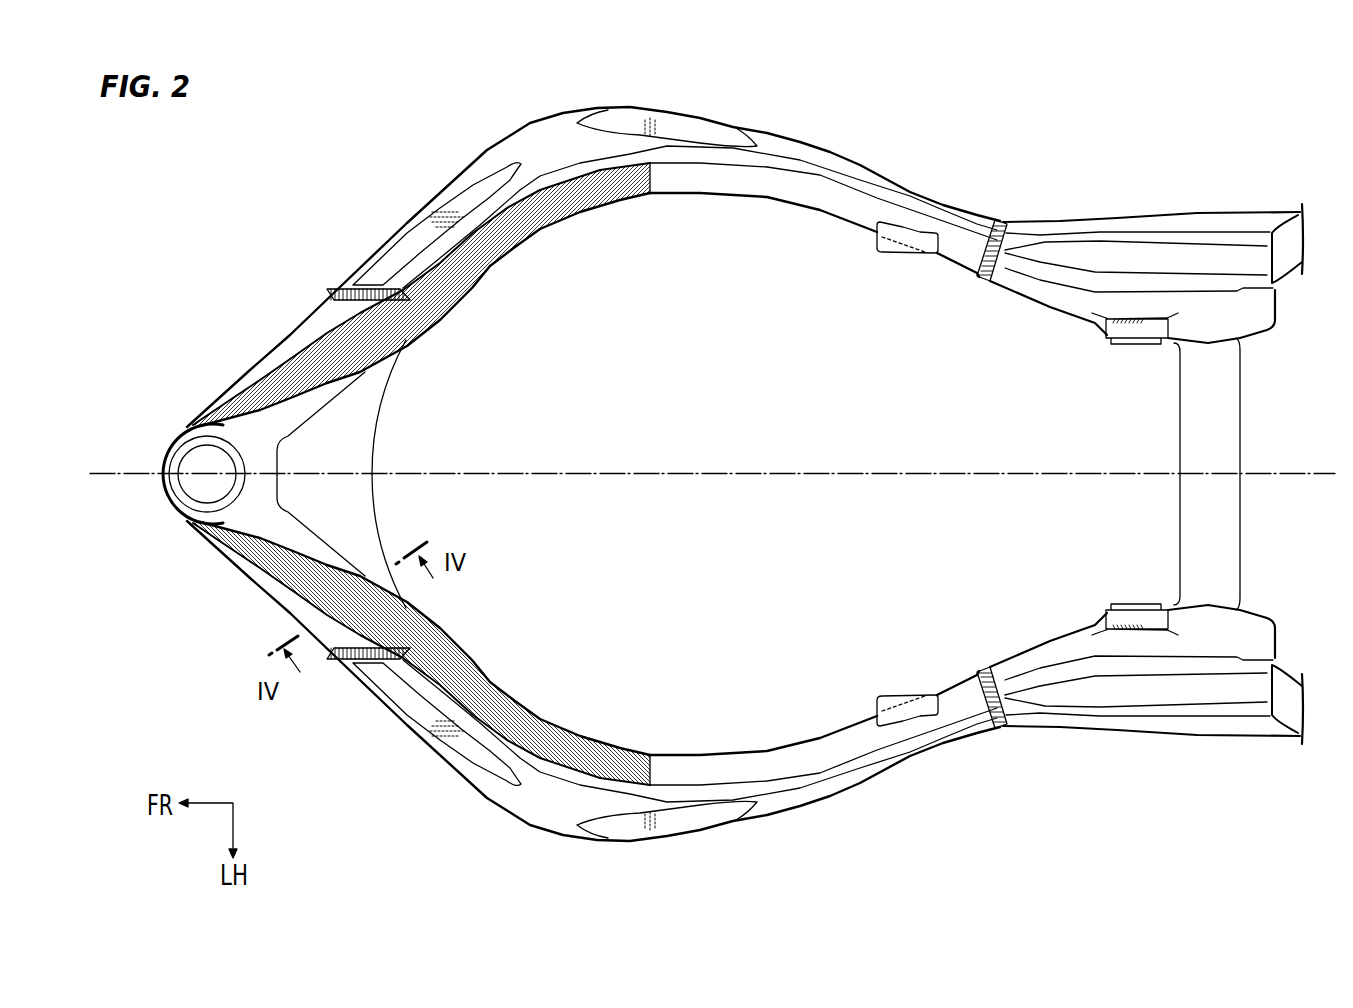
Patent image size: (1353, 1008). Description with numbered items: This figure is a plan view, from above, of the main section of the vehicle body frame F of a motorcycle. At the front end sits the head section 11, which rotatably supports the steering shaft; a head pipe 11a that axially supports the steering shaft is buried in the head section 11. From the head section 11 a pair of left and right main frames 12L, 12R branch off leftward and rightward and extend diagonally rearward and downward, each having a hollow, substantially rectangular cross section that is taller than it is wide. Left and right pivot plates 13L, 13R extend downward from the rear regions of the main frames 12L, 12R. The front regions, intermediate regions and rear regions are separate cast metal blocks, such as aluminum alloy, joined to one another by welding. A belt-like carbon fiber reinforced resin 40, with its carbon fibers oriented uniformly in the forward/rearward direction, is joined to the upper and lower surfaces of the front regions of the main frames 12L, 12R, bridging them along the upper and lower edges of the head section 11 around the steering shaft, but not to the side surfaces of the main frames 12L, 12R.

The vehicle body frame F is at (928, 147).
The head section 11 is at (235, 427).
The head pipe 11a is at (183, 447).
The right main frame 12R is at (527, 143).
The left main frame 12L is at (538, 812).
The right pivot plate 13R is at (1227, 220).
The left pivot plate 13L is at (1155, 688).
The carbon fiber reinforced resin 40 is at (508, 712).